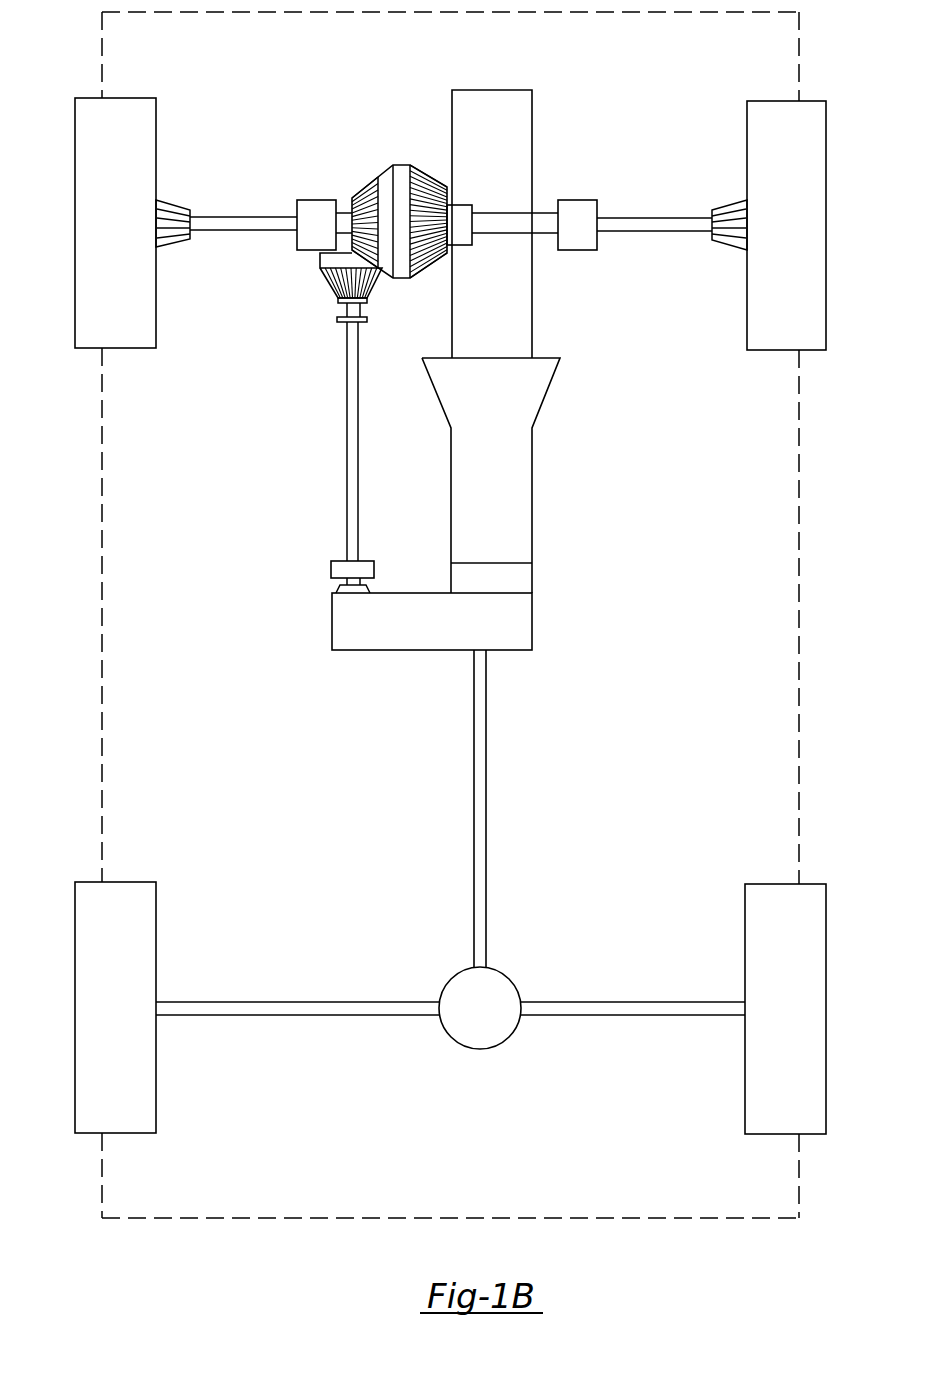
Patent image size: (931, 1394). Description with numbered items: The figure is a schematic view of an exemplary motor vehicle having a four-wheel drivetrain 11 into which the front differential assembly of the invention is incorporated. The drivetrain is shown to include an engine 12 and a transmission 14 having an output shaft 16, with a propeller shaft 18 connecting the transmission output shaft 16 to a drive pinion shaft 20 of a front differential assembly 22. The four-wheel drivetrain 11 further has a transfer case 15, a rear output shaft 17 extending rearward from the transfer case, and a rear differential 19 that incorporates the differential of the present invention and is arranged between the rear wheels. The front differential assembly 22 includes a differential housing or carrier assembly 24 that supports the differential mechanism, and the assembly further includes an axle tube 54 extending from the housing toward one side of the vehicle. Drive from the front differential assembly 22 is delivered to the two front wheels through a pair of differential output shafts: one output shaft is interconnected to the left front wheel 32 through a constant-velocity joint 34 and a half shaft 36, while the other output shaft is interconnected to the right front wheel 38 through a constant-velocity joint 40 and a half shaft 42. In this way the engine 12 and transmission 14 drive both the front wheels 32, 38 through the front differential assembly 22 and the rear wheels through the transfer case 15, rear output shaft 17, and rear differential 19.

The four-wheel drivetrain 11 is at (316, 97).
The engine 12 is at (533, 112).
The transmission 14 is at (533, 458).
The transfer case 15 is at (533, 607).
The output shaft 16 is at (331, 569).
The rear output shaft 17 is at (486, 775).
The propeller shaft 18 is at (358, 338).
The rear differential 19 is at (450, 1042).
The drive pinion shaft 20 is at (340, 313).
The front differential assembly 22 is at (373, 166).
The differential housing 24 is at (400, 165).
The left front wheel 32 is at (132, 98).
The constant-velocity joint 34 is at (320, 200).
The half shaft 36 is at (240, 217).
The right front wheel 38 is at (765, 101).
The constant-velocity joint 40 is at (578, 200).
The half shaft 42 is at (656, 218).
The axle tube 54 is at (545, 250).